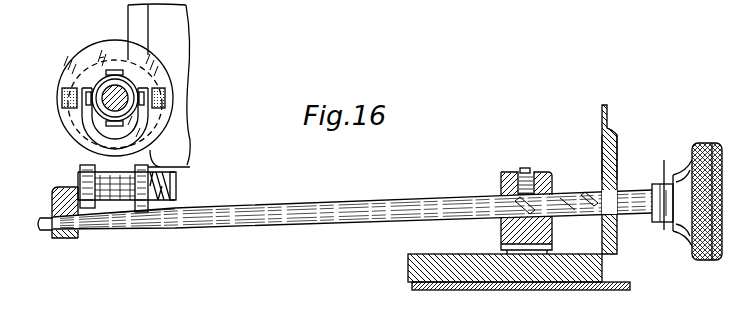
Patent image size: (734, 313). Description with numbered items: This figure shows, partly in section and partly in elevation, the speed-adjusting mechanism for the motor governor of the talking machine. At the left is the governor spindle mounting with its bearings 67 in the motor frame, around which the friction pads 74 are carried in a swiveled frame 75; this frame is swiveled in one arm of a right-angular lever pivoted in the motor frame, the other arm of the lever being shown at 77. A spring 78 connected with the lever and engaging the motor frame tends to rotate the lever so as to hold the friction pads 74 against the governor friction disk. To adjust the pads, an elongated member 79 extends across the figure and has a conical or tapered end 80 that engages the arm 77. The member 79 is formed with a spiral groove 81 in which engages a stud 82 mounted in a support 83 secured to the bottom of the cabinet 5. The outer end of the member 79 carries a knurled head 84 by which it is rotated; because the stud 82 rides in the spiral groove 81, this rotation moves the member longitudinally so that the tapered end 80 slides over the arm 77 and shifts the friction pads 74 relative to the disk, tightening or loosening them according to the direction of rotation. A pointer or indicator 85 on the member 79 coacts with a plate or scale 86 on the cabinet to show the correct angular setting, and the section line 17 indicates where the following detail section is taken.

The cabinet 5 is at (608, 109).
The section line 17— 17 is at (671, 197).
The bearings 67 is at (87, 169).
The friction pads 74 is at (65, 86).
The frame 75 is at (83, 153).
The arm 77 is at (68, 238).
The spring 78 is at (176, 174).
The elongated member 79 is at (265, 228).
The conical or tapered end 80 is at (133, 229).
The spiral groove 81 is at (585, 193).
The stud 82 is at (525, 170).
The support 83 is at (501, 179).
The knurled head 84 is at (697, 145).
The pointer or indicator 85 is at (658, 225).
The plate or scale 86 is at (617, 137).